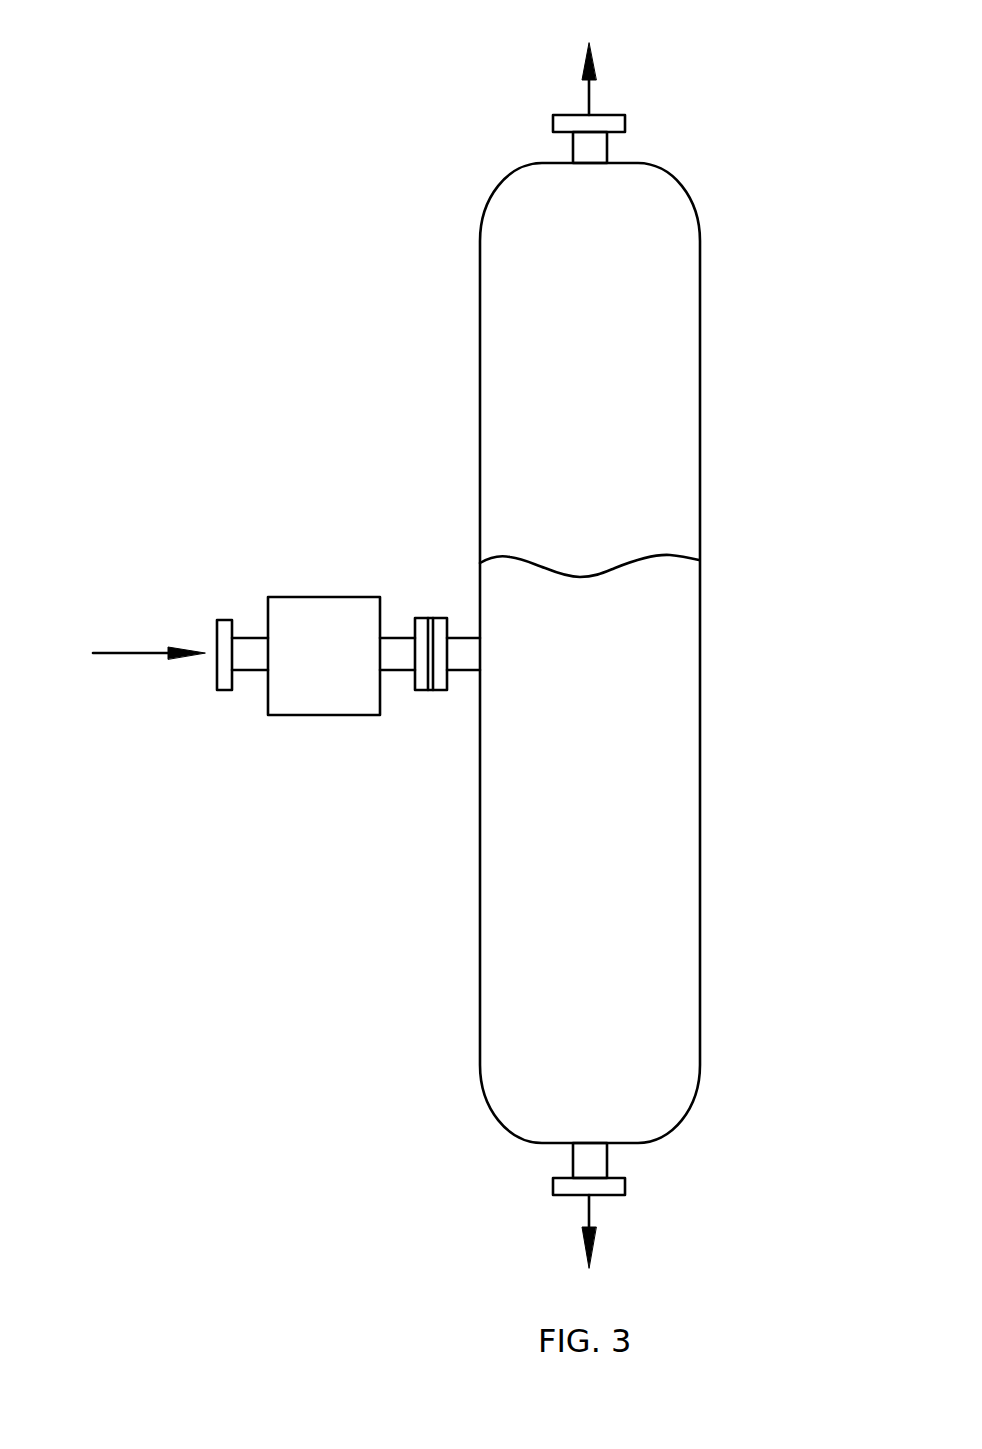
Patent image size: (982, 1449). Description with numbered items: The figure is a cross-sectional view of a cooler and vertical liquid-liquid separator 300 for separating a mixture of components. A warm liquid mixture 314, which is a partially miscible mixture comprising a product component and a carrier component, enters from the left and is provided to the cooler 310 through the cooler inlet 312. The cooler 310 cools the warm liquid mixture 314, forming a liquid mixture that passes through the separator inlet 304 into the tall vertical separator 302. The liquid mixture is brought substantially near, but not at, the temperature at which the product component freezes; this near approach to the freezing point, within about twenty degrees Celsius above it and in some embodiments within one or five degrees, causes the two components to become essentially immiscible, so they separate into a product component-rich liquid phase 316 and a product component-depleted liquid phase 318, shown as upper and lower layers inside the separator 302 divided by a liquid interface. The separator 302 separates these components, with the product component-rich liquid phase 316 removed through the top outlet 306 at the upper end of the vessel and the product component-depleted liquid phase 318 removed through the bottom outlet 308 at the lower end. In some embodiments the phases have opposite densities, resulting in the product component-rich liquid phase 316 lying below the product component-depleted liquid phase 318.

The cooler and vertical liquid-liquid separator 300 is at (198, 90).
The separator 302 is at (480, 298).
The separator inlet 304 is at (462, 637).
The top outlet 306 is at (607, 147).
The bottom outlet 308 is at (607, 1163).
The cooler 310 is at (315, 597).
The cooler inlet 312 is at (255, 672).
The warm liquid mixture 314 is at (119, 657).
The product component-rich liquid phase 316 is at (767, 473).
The product component-depleted liquid phase 318 is at (775, 685).